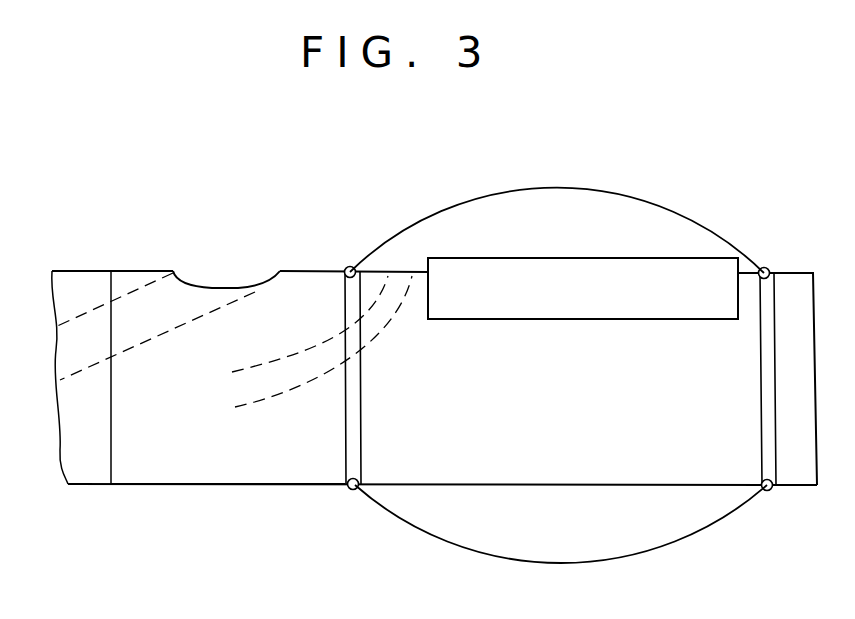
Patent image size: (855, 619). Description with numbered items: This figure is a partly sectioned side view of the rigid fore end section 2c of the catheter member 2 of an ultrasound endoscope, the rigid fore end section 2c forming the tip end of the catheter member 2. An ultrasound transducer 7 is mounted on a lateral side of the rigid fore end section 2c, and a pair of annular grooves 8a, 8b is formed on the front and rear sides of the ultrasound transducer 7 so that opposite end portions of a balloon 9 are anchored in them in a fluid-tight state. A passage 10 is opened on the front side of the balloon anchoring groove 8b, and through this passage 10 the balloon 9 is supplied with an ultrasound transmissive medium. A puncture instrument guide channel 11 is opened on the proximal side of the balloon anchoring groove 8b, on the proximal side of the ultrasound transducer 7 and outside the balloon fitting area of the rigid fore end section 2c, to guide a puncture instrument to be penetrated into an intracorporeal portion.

The catheter member 2 is at (131, 267).
The rigid fore end section 2c is at (215, 477).
The ultrasound transducer 7 is at (623, 265).
The annular groove 8a is at (763, 443).
The annular groove 8b is at (347, 473).
The balloon 9 is at (483, 552).
The passage 10 is at (388, 276).
The puncture instrument guide channel 11 is at (198, 287).